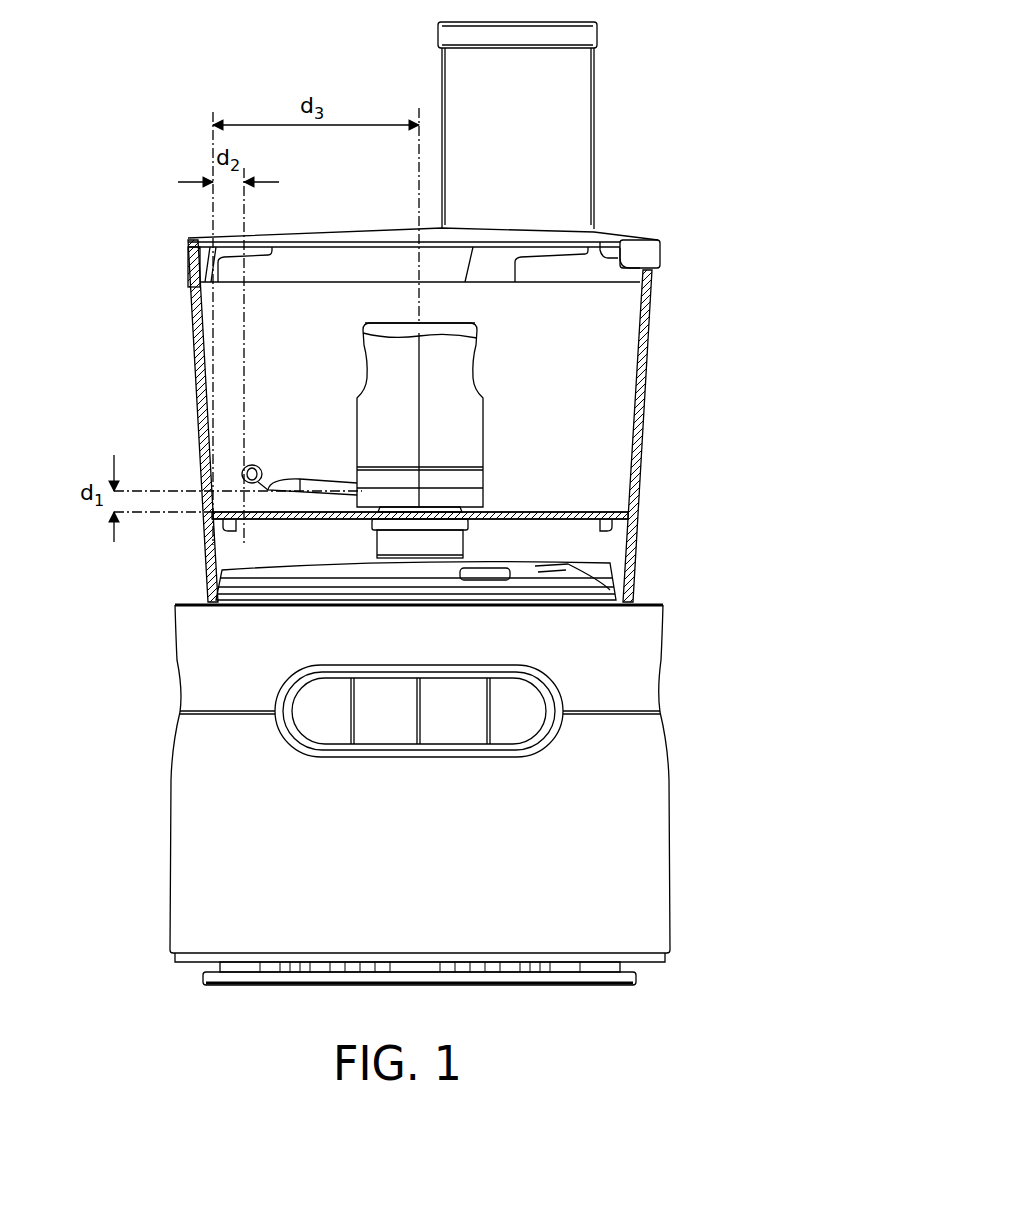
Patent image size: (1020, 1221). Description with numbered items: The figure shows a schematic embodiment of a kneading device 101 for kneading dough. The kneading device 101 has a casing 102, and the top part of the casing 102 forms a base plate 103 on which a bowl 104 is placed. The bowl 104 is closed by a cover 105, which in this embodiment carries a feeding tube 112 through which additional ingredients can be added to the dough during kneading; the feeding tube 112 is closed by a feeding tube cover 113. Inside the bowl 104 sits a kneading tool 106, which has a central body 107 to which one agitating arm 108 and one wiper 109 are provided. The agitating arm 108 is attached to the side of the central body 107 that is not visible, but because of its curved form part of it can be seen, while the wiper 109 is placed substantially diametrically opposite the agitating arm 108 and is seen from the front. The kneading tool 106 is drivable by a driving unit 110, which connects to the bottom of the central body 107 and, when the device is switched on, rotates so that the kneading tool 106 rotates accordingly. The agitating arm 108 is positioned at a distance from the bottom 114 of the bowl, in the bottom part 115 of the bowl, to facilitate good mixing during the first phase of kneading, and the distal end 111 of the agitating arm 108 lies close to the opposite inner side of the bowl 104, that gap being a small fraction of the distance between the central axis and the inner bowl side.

The kneading device 101 is at (117, 335).
The casing 102 is at (668, 838).
The base plate 103 is at (412, 588).
The bowl 104 is at (640, 415).
The cover 105 is at (650, 253).
The kneading tool 106 is at (455, 372).
The central body 107 is at (422, 320).
The agitating arm 108 is at (310, 480).
The wiper 109 is at (421, 448).
The driving unit 110 is at (419, 530).
The distal end of agitating arm 111 is at (245, 478).
The feeding tube 112 is at (583, 143).
The feeding tube cover 113 is at (583, 38).
The bottom of the bowl 114 is at (600, 512).
The bottom part of kneading bowl 115 is at (648, 467).